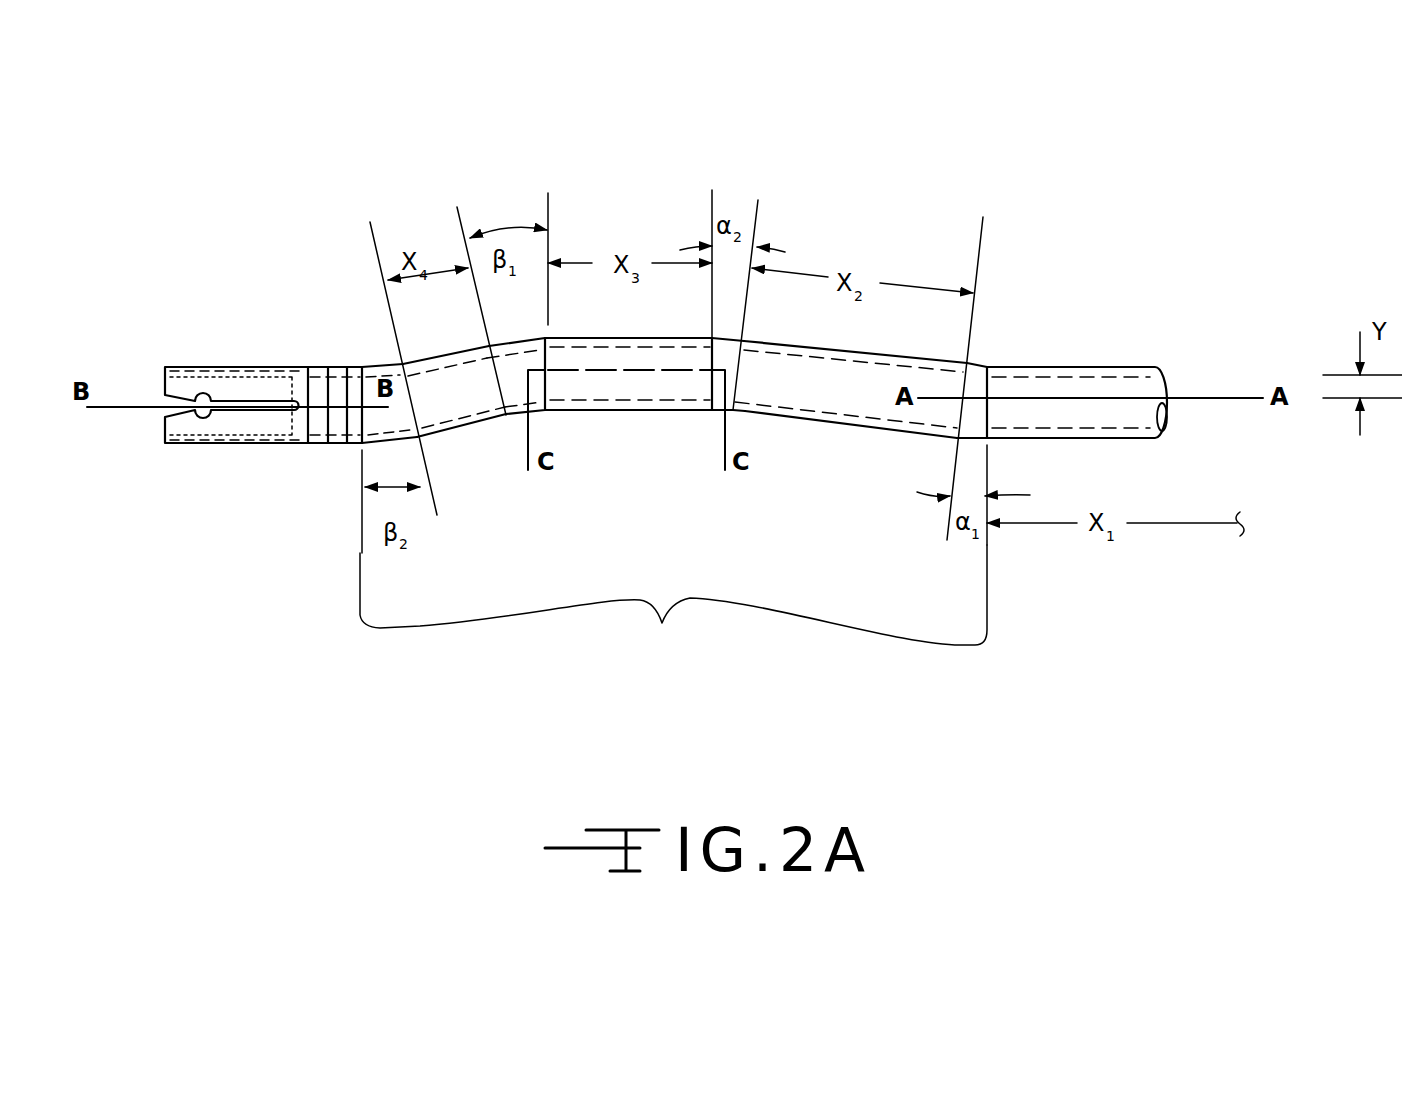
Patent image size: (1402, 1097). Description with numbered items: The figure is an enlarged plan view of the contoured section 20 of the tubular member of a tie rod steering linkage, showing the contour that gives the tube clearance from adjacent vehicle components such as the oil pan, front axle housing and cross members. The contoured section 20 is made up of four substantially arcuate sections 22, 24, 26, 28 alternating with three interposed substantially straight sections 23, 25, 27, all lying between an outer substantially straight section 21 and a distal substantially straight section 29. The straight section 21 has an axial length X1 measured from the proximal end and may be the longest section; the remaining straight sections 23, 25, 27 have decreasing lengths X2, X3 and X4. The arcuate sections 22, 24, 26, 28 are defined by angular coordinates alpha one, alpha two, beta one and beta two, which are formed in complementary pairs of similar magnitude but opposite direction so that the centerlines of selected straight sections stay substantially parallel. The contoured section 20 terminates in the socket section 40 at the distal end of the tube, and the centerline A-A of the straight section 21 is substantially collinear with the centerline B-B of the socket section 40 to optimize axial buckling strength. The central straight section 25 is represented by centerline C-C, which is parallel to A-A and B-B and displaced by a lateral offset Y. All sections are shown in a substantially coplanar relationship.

The contoured section 20 is at (673, 609).
The substantially straight section 21 is at (1075, 363).
The substantially arcuate section 22 is at (977, 365).
The substantially straight section 23 is at (847, 423).
The substantially arcuate section 24 is at (732, 412).
The substantially straight section 25 is at (617, 410).
The substantially arcuate section 26 is at (515, 418).
The substantially straight section 27 is at (452, 428).
The substantially arcuate section 28 is at (390, 367).
The substantially straight section 29 is at (353, 370).
The socket section 40 is at (348, 450).